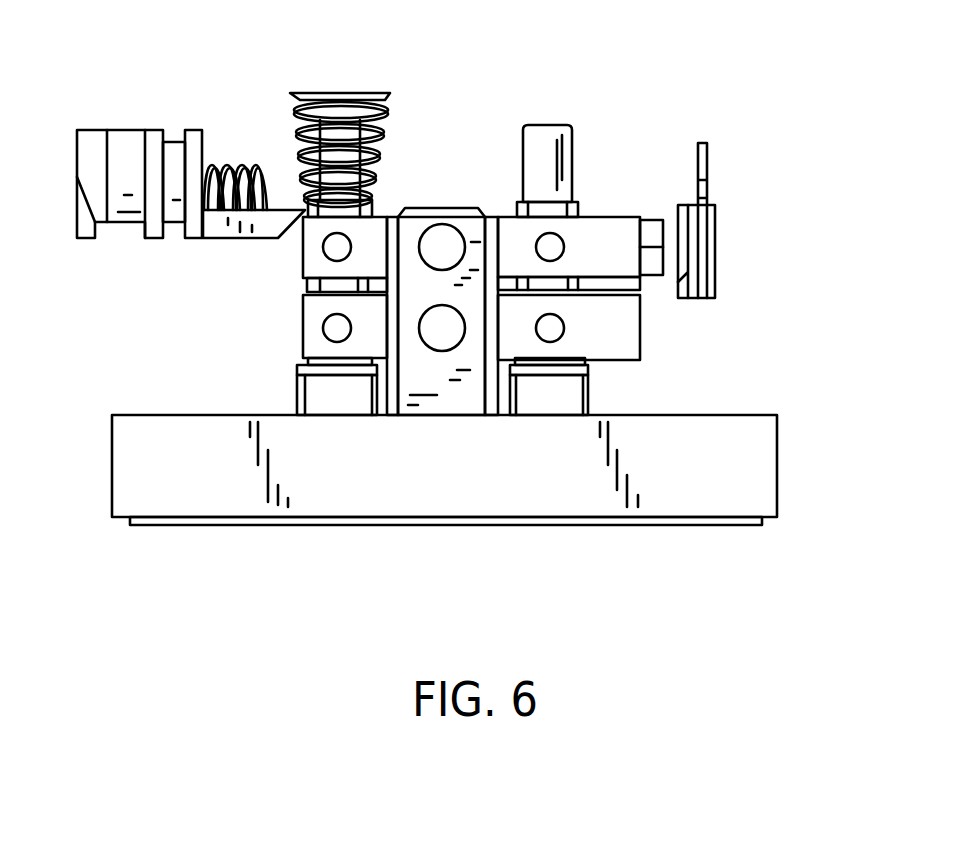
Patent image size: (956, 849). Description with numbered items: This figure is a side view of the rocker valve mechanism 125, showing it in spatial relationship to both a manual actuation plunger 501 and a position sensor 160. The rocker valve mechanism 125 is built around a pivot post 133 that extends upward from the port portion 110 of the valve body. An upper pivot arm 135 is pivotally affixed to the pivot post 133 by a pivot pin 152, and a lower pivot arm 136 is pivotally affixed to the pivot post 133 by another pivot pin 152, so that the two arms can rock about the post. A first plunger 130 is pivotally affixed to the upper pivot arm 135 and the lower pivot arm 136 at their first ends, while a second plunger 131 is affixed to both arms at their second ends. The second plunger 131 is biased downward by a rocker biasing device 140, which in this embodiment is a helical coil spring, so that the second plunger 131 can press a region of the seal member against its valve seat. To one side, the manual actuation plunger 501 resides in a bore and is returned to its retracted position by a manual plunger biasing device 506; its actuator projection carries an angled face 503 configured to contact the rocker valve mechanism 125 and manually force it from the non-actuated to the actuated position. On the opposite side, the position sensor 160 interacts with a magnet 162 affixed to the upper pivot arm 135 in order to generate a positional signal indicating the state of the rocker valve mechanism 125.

The port portion 110 is at (777, 482).
The rocker valve mechanism 125 is at (66, 589).
The first plunger 130 is at (572, 138).
The second plunger 131 is at (303, 288).
The pivot post 133 is at (450, 207).
The upper pivot arm 135 is at (618, 215).
The lower pivot arm 136 is at (640, 337).
The rocker biasing device 140 is at (292, 95).
The pivot pin 152 is at (428, 226).
The position sensor 160 is at (717, 252).
The magnet 162 is at (658, 278).
The manual actuation plunger 501 is at (126, 130).
The angled face 503 is at (305, 233).
The manual plunger biasing device 506 is at (252, 163).